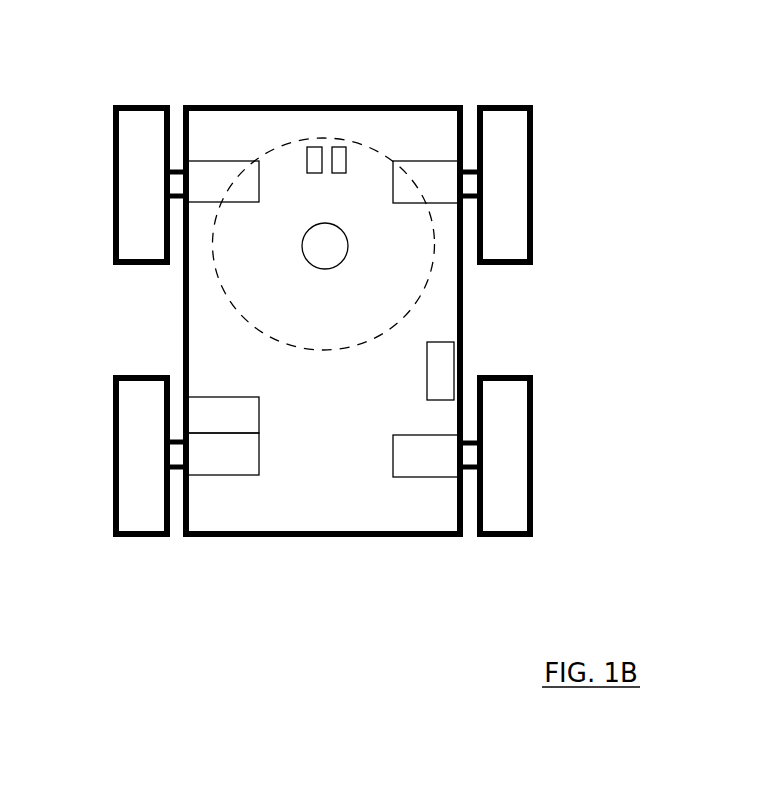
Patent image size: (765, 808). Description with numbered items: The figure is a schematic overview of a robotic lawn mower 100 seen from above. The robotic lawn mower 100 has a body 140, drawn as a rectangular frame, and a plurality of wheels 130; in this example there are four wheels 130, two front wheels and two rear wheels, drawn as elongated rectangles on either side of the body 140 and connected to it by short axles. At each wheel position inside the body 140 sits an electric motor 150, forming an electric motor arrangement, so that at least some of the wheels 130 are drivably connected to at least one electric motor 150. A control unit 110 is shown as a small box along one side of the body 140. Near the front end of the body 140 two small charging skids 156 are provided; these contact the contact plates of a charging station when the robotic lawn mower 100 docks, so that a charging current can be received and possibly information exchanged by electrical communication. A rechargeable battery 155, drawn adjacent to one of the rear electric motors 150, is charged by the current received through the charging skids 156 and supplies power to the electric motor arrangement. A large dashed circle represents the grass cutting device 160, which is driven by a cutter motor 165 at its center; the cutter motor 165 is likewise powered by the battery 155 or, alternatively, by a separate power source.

The robotic lawn mower 100 is at (176, 102).
The control unit 110 is at (440, 367).
The wheels 130 is at (140, 104).
The body 140 is at (205, 106).
The electric motor 150 is at (323, 319).
The battery 155 is at (223, 415).
The charging skids 156 is at (316, 147).
The grass cutting device 160 is at (245, 320).
The cutter motor 165 is at (312, 265).